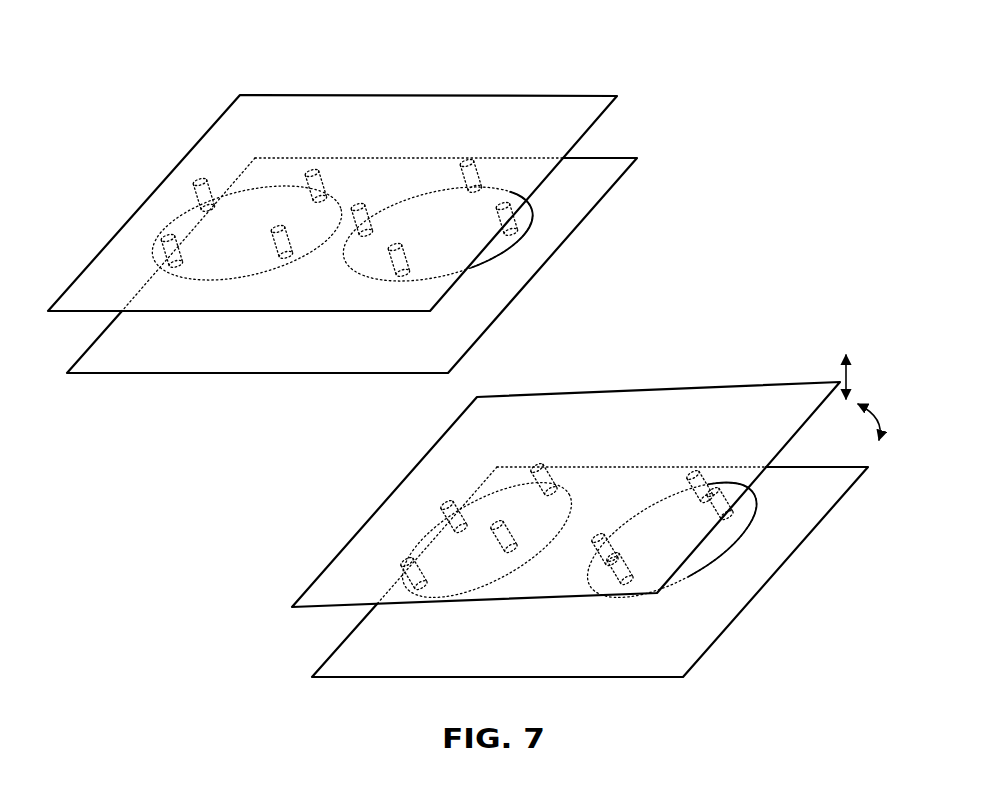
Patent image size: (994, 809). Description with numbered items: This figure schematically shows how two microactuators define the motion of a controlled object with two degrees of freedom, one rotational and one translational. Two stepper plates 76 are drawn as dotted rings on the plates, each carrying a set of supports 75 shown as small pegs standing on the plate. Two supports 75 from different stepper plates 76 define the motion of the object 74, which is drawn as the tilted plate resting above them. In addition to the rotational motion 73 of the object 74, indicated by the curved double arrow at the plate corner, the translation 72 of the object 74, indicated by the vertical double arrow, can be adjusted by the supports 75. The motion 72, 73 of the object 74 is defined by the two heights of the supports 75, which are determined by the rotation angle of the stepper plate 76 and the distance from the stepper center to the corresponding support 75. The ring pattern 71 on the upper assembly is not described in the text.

The ring-shaped pin pattern on upper plate 71 is at (520, 222).
The translational motion 72 is at (828, 360).
The rotational motion 73 is at (883, 450).
The object 74 is at (428, 452).
The support 75 is at (502, 523).
The stepper plate 76 is at (455, 562).